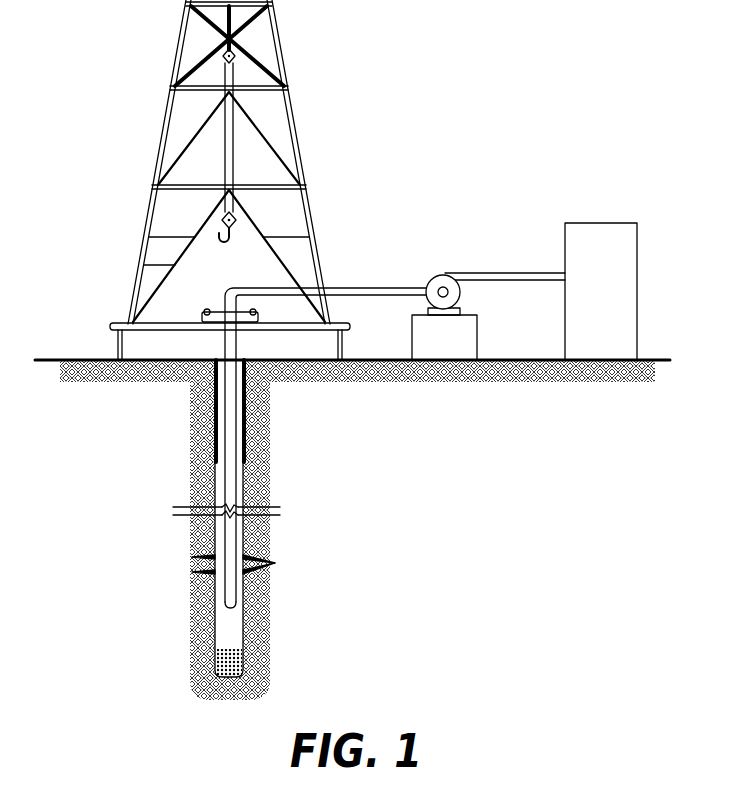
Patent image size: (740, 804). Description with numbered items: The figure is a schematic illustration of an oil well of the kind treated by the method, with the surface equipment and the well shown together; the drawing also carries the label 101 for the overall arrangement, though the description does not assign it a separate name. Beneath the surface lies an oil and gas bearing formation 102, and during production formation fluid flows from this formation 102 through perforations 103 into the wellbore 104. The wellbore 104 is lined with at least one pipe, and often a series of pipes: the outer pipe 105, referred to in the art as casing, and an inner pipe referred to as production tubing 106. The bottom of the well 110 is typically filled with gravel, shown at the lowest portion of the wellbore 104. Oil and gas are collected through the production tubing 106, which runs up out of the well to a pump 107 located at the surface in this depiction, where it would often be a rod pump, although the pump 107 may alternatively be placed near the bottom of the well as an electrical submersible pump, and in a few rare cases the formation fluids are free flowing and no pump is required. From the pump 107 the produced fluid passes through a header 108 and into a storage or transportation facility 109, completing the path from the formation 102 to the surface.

The surface well site system 101 is at (568, 456).
The oil and gas bearing formation 102 is at (310, 588).
The perforations 103 is at (275, 563).
The wellbore 104 is at (244, 483).
The outer pipe 105 is at (247, 438).
The production tubing 106 is at (228, 487).
The pump 107 is at (432, 276).
The header 108 is at (516, 272).
The storage or transportation facility 109 is at (618, 222).
The bottom of the well 110 is at (233, 663).